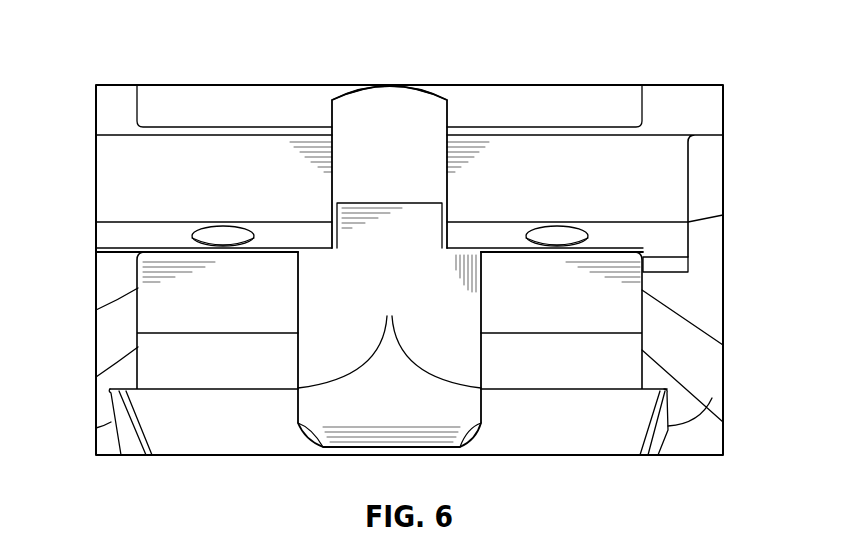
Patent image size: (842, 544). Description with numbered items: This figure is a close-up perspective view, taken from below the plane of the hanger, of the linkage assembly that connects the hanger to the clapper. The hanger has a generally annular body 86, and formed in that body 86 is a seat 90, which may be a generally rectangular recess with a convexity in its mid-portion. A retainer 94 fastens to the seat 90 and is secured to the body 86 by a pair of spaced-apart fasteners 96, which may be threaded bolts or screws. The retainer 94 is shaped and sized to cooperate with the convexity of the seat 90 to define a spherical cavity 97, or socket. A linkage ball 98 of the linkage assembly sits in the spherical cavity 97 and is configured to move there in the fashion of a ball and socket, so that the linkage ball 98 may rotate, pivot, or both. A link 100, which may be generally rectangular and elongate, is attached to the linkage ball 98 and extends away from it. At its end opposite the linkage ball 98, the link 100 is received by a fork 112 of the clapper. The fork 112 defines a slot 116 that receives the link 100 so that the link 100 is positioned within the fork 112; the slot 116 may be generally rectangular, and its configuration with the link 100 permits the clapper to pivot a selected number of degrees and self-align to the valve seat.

The body 86 is at (695, 120).
The seat 90 is at (553, 125).
The retainer 94 is at (275, 100).
The fasteners 96 is at (230, 236).
The spherical cavity 97 is at (335, 86).
The linkage ball 98 is at (407, 98).
The link 100 is at (450, 322).
The fork 112 is at (163, 312).
The slot 116 is at (389, 337).